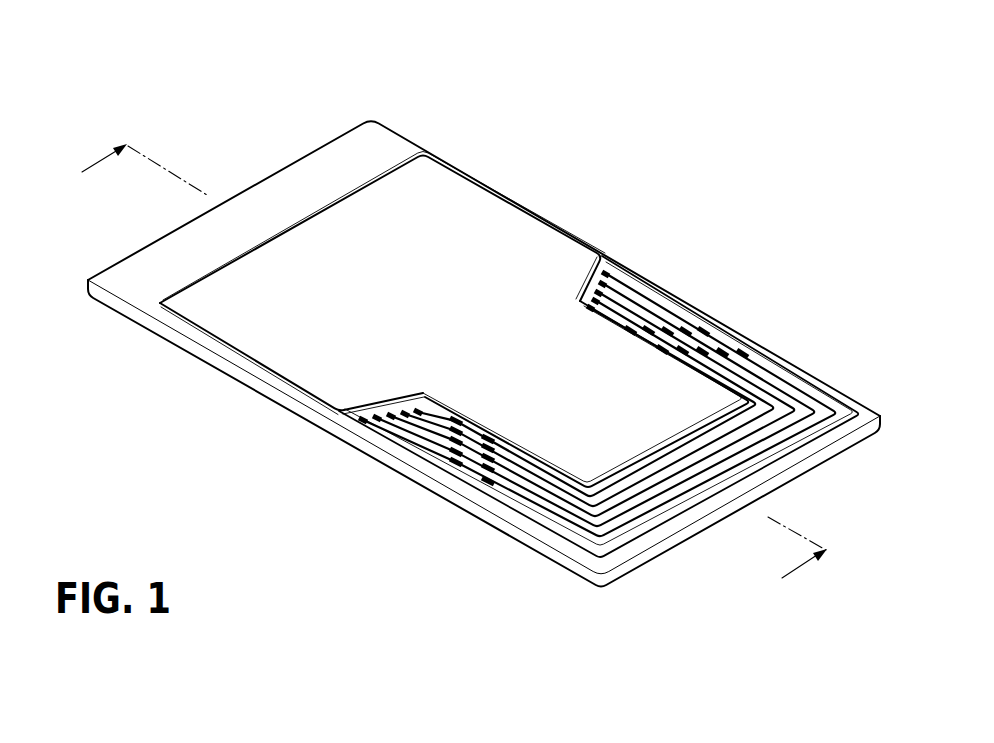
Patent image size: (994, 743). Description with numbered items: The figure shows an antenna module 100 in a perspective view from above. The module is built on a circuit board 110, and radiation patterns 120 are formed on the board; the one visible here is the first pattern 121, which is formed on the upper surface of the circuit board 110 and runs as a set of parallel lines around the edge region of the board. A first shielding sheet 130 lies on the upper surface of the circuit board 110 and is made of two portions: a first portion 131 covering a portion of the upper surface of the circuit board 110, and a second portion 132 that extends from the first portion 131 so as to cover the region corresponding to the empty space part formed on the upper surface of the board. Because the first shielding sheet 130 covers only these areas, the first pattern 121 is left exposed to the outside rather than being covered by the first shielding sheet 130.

The antenna module 100 is at (393, 54).
The circuit board 110 is at (722, 316).
The radiation patterns 120 is at (773, 355).
The first pattern 121 is at (800, 390).
The first shielding sheet 130 is at (553, 219).
The first portion 131 is at (452, 202).
The second portion 132 is at (600, 348).